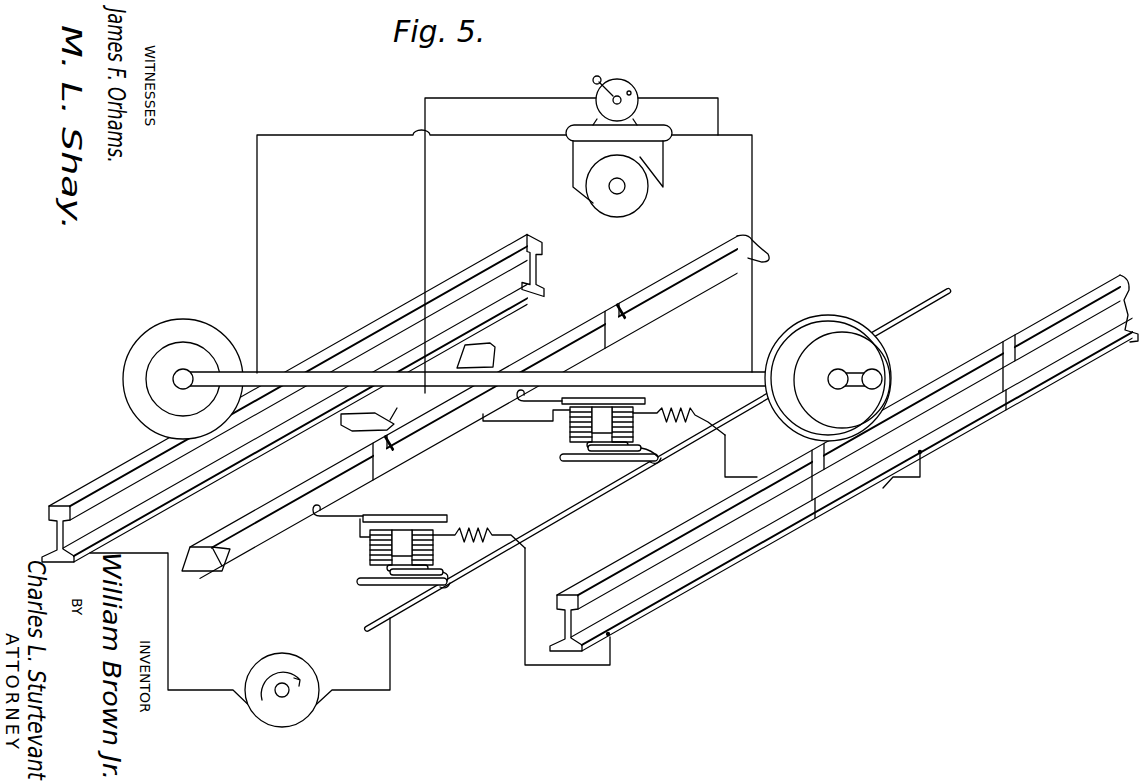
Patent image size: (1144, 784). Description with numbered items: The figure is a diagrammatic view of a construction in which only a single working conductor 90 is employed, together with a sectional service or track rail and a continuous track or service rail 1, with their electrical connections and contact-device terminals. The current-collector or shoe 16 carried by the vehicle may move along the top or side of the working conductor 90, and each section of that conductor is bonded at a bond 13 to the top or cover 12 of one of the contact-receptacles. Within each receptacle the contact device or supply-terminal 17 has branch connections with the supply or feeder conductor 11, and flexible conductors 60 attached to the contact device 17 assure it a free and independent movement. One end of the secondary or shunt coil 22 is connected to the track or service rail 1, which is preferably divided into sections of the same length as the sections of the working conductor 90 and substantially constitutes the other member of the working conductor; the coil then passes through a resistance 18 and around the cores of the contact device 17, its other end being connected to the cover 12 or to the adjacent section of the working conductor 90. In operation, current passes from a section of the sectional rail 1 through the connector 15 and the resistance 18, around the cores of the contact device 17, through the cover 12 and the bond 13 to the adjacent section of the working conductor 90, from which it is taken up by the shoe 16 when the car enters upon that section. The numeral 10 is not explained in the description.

The track or service rail 1 is at (722, 548).
The contact 10 is at (439, 591).
The supply or feeder conductor 11 is at (584, 503).
The top or cover 12 is at (613, 398).
The bond 13 is at (321, 518).
The connector 15 is at (517, 607).
The current-collector or shoe 16 is at (385, 430).
The contact device or supply-terminal 17 is at (400, 553).
The resistance 18 is at (579, 478).
The secondary or shunt coil 22 is at (456, 483).
The flexible conductors 60 is at (506, 524).
The working conductor 90 is at (435, 440).